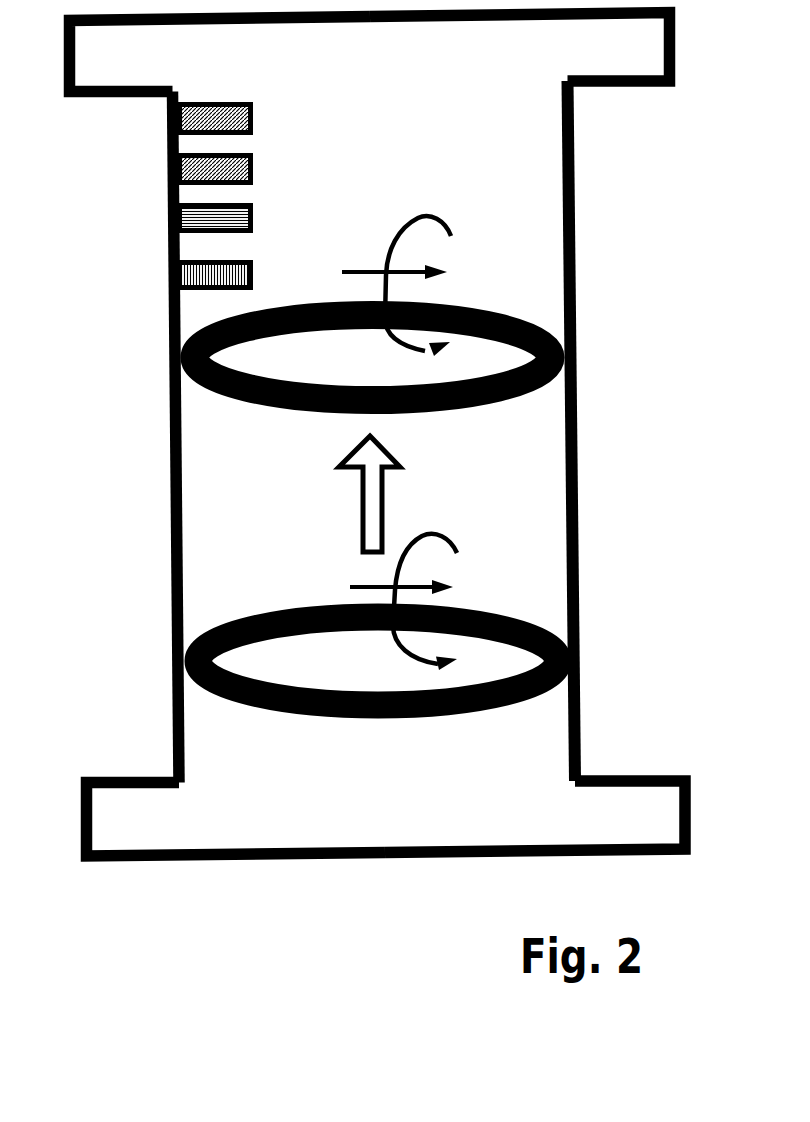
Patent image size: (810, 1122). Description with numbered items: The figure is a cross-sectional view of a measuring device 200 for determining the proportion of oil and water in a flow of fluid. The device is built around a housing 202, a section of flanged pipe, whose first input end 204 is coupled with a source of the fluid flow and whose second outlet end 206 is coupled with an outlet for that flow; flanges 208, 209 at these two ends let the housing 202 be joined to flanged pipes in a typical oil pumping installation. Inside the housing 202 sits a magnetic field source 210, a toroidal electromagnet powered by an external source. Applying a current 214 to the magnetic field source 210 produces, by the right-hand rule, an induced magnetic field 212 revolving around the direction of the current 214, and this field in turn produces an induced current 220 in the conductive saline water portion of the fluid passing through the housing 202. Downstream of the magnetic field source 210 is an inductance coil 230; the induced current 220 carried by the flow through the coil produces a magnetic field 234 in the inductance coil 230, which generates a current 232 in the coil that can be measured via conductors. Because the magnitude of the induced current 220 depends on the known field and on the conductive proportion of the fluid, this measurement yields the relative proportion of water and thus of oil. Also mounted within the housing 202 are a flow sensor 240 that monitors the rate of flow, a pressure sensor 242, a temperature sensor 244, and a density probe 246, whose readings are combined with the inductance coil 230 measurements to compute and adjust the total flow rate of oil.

The measuring device 200 is at (656, 239).
The housing 202 is at (166, 763).
The first input end 204 is at (76, 822).
The second outlet end 206 is at (61, 81).
The flange 208 is at (690, 810).
The flange 209 is at (677, 24).
The magnetic field source 210 is at (524, 612).
The induced magnetic field 212 is at (372, 585).
The current 214 is at (432, 532).
The induced current 220 is at (363, 492).
The inductance coil 230 is at (493, 405).
The current 232 is at (432, 214).
The magnetic field 234 is at (370, 270).
The flow sensor 240 is at (168, 275).
The pressure sensor 242 is at (168, 219).
The temperature sensor 244 is at (168, 168).
The density probe 246 is at (168, 118).